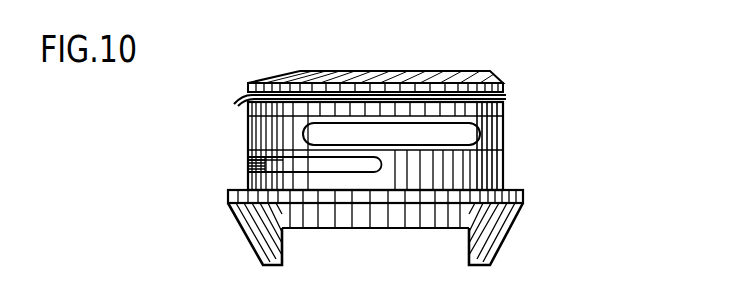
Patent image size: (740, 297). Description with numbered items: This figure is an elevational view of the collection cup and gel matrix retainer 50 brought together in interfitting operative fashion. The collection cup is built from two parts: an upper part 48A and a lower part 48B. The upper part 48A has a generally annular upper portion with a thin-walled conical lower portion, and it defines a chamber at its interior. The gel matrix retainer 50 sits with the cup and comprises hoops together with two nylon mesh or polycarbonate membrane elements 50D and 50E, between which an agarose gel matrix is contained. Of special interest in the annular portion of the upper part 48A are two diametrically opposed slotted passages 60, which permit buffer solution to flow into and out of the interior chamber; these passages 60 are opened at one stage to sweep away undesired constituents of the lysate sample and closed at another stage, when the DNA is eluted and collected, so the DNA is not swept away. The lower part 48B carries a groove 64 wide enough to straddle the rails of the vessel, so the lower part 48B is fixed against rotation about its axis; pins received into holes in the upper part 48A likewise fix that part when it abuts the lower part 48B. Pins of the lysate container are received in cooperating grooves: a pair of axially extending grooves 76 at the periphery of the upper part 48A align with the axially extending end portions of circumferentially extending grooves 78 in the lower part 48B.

The gel matrix retainer 50 is at (424, 72).
The nylon mesh or polycarbonate membrane element 50E is at (507, 94).
The nylon mesh or polycarbonate membrane element 50D is at (507, 98).
The upper part of collection cup 48A is at (503, 146).
The lower part of collection cup 48B is at (524, 198).
The slotted passage 60 is at (415, 126).
The axially extending groove 76 is at (248, 163).
The circumferentially extending groove 78 is at (287, 168).
The groove 64 is at (470, 237).